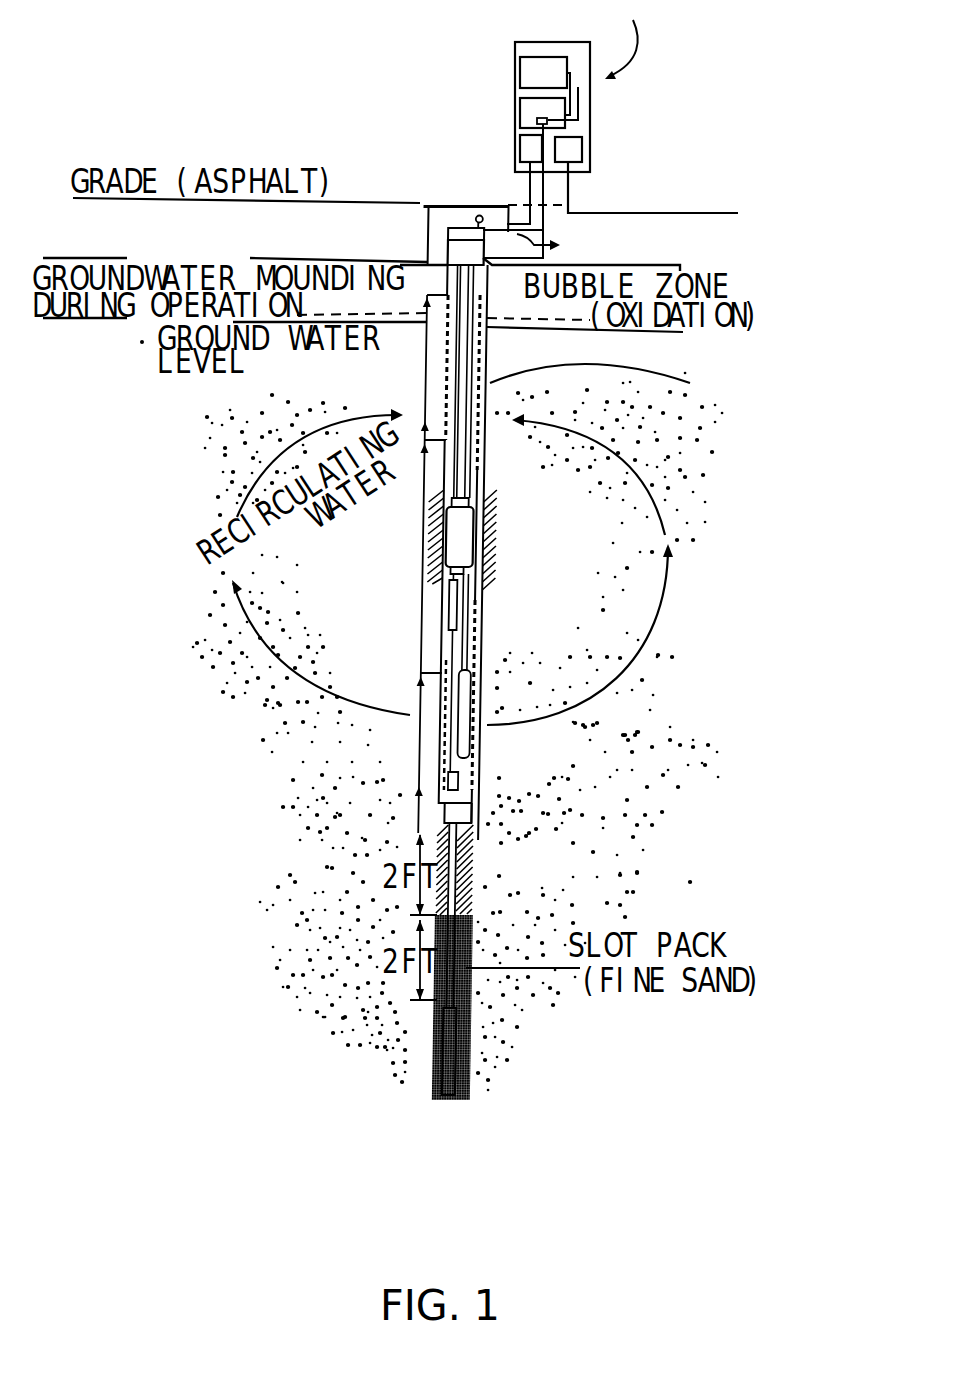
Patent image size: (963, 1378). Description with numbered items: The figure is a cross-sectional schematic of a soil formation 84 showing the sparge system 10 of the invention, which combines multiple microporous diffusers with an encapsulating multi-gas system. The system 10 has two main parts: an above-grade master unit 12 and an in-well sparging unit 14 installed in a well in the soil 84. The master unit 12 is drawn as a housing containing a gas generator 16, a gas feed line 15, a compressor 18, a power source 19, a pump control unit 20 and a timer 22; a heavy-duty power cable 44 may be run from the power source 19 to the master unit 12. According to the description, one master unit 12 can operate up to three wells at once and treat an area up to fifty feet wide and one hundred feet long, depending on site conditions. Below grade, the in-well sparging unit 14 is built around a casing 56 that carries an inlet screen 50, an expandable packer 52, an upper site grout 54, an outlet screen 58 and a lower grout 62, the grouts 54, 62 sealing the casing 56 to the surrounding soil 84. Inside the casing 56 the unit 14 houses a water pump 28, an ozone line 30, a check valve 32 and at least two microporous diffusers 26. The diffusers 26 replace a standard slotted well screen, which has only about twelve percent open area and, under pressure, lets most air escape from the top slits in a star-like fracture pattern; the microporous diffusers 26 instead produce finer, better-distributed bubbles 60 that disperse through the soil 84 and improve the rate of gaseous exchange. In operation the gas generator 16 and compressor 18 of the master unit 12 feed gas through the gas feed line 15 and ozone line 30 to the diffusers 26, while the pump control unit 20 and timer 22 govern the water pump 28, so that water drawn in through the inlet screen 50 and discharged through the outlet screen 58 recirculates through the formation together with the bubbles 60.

The sparge system 10 is at (629, 39).
The master unit 12 is at (590, 102).
The in-well sparging unit 14 is at (613, 384).
The gas feed line 15 is at (565, 248).
The gas generator 16 is at (533, 67).
The compressor 18 is at (533, 107).
The power source 19 is at (653, 188).
The pump control unit 20 is at (533, 152).
The timer 22 is at (575, 145).
The microporous diffuser 26 is at (476, 747).
The water pump 28 is at (478, 600).
The ozone line 30 is at (499, 645).
The check valve 32 is at (443, 783).
The heavy-duty power cable 44 is at (527, 195).
The inlet screen 50 is at (427, 398).
The expandable packer 52 is at (485, 542).
The upper site grout 54 is at (443, 560).
The casing 56 is at (442, 637).
The outlet screen 58 is at (427, 762).
The bubbles 60 is at (220, 641).
The lower grout 62 is at (468, 862).
The soil 84 is at (213, 777).